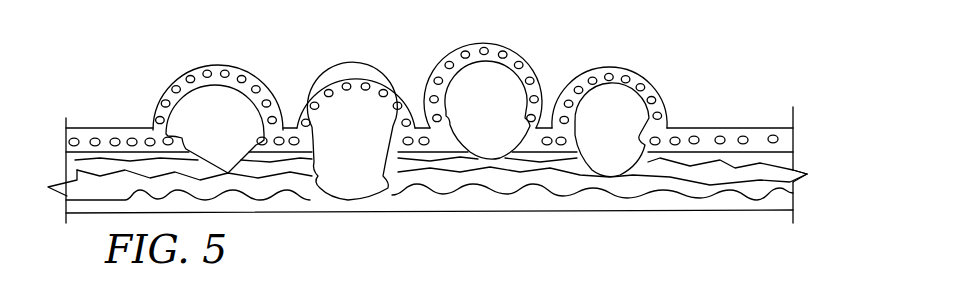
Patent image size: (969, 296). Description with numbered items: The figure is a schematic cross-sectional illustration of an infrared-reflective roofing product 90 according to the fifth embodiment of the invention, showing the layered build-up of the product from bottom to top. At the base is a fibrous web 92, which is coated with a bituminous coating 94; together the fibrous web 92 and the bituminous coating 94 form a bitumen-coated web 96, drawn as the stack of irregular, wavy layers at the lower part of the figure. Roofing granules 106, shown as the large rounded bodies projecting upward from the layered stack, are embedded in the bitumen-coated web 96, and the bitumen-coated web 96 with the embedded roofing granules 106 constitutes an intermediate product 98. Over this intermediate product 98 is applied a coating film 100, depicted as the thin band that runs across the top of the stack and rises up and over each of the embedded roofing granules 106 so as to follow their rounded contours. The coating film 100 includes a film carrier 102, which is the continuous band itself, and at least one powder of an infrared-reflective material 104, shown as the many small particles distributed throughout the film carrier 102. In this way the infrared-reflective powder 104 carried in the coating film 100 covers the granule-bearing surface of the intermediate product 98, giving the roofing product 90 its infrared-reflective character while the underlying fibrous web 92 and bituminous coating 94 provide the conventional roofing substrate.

The infrared-reflective roofing product 90 is at (702, 55).
The fibrous web 92 is at (752, 193).
The bituminous coating 94 is at (572, 200).
The bitumen-coated web 96 is at (693, 212).
The intermediate product 98 is at (265, 198).
The coating film 100 is at (712, 128).
The film carrier 102 is at (602, 68).
The infrared-reflective material 104 is at (466, 54).
The roofing granules 106 is at (238, 126).